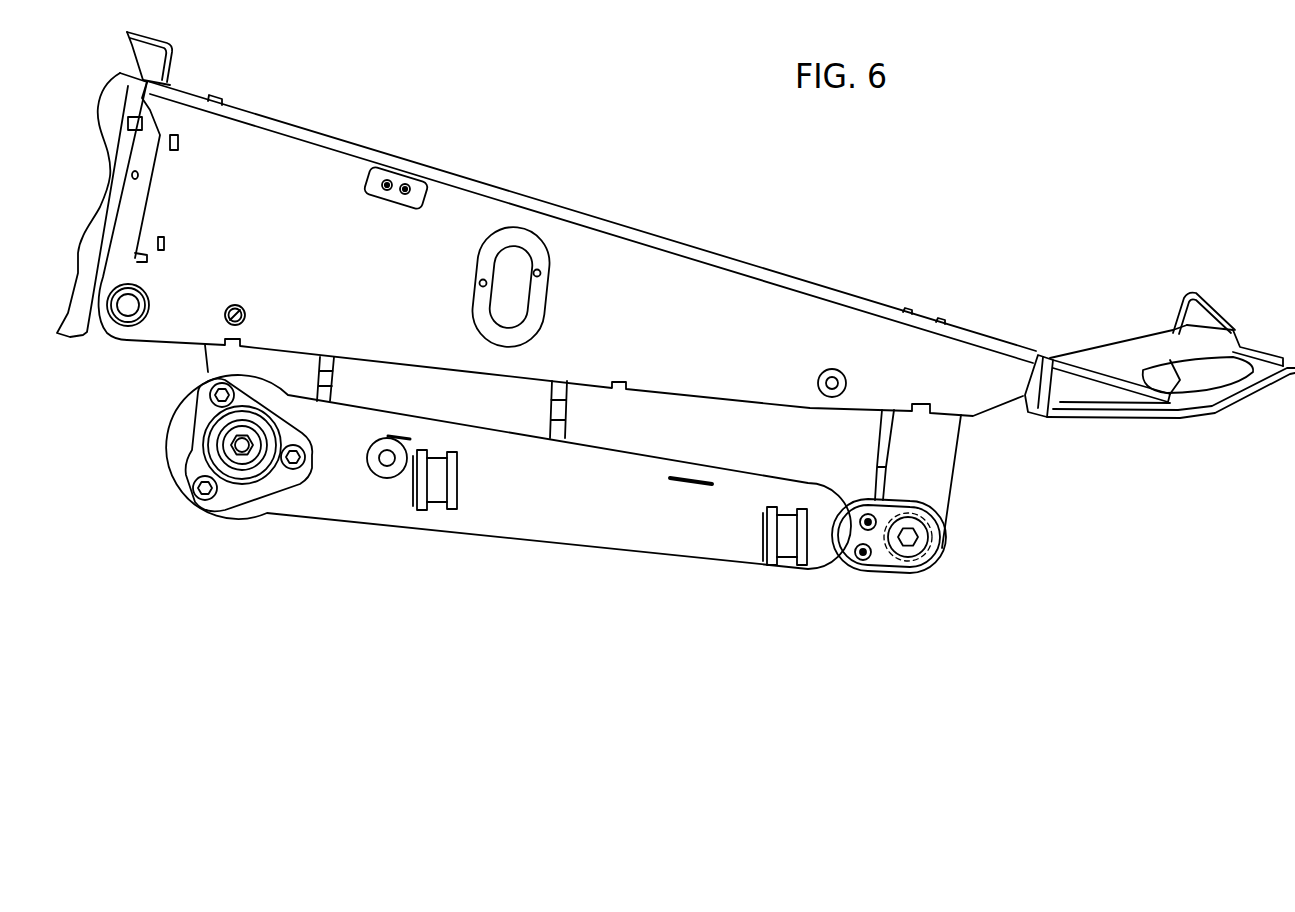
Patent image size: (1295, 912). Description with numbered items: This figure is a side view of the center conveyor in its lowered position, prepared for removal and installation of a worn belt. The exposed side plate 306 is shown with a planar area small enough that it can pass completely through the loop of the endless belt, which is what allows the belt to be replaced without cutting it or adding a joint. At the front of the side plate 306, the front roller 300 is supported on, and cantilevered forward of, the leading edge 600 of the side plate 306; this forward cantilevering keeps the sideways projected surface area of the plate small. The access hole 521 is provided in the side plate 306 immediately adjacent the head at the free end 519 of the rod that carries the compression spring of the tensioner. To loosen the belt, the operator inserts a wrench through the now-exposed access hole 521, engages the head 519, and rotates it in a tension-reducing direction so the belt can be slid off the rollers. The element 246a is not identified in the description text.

The frame plate 246a is at (595, 283).
The side plate 306 is at (567, 505).
The head at the free end of the rod 519 is at (388, 478).
The access hole 521 is at (383, 473).
The leading edge 600 is at (880, 558).
The front roller 300 is at (942, 548).